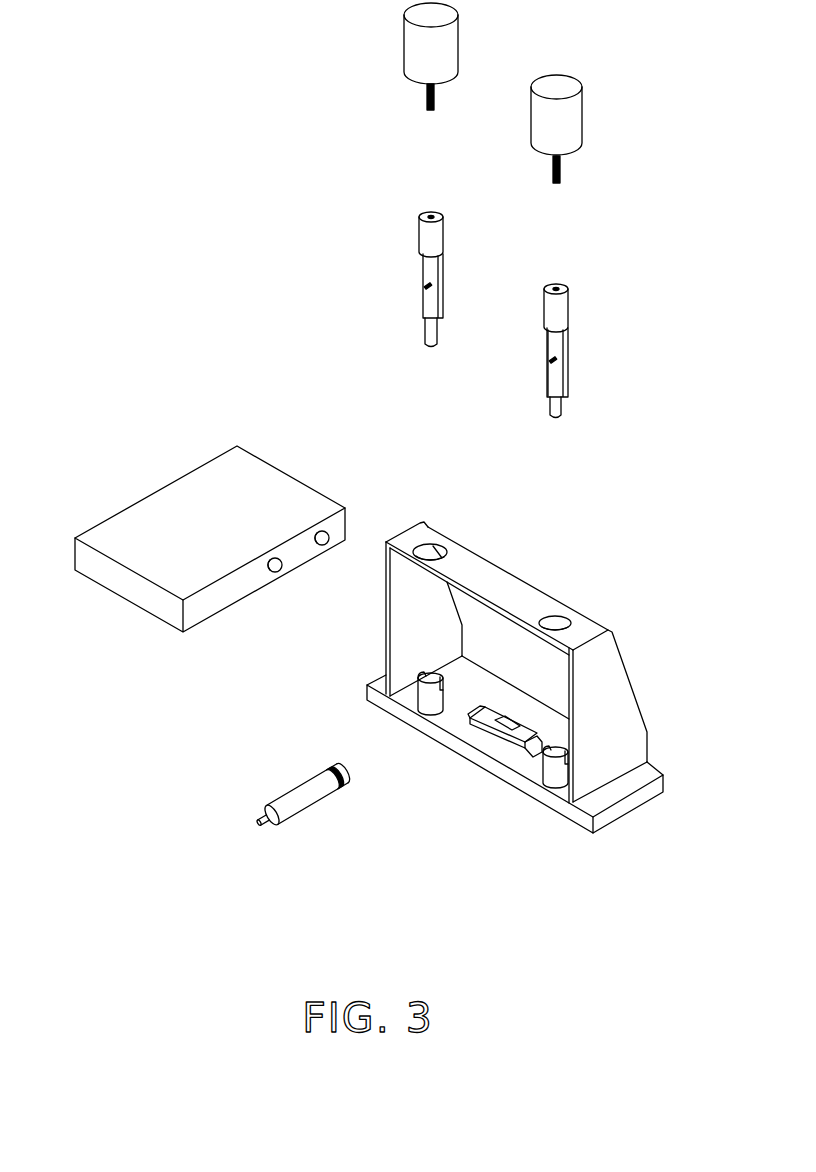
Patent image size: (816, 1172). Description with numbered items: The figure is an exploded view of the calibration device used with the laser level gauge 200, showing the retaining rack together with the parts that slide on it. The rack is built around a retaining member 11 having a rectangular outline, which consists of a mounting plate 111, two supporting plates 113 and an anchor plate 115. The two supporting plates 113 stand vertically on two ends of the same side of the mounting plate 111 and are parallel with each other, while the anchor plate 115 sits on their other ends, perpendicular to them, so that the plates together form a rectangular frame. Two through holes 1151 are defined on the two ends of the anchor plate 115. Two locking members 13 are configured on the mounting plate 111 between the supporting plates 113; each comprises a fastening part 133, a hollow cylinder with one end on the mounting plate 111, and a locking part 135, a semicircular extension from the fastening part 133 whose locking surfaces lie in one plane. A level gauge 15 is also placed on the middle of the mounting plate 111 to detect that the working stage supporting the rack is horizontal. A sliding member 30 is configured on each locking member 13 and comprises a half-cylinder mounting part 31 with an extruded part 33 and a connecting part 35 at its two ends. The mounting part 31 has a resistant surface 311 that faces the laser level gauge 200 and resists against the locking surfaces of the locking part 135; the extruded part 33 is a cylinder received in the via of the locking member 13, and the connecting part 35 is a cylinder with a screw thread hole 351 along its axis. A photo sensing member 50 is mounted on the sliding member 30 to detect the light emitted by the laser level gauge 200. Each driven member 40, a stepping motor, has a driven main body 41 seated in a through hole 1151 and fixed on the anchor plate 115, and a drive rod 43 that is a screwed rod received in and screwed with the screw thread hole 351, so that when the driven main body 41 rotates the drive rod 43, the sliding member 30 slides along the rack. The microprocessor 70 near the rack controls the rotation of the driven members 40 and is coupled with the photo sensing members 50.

The retaining member 11 is at (502, 680).
The mounting plate 111 is at (632, 783).
The supporting plates 113 is at (387, 632).
The anchor plate 115 is at (521, 590).
The through holes 1151 is at (557, 623).
The locking members 13 is at (493, 760).
The fastening part 133 is at (555, 777).
The locking part 135 is at (533, 755).
The level gauge 15 is at (490, 725).
The sliding member 30 is at (564, 320).
The mounting part 31 is at (560, 360).
The resistant surface 311 is at (555, 340).
The extruded part 33 is at (608, 404).
The connecting part 35 is at (558, 315).
The screw thread hole 351 is at (559, 288).
The photo sensing member 50 is at (547, 360).
The driven member 40 is at (550, 93).
The driven main body 41 is at (562, 123).
The drive rod 43 is at (562, 168).
The microprocessor 70 is at (180, 493).
The laser level gauge 200 is at (310, 788).